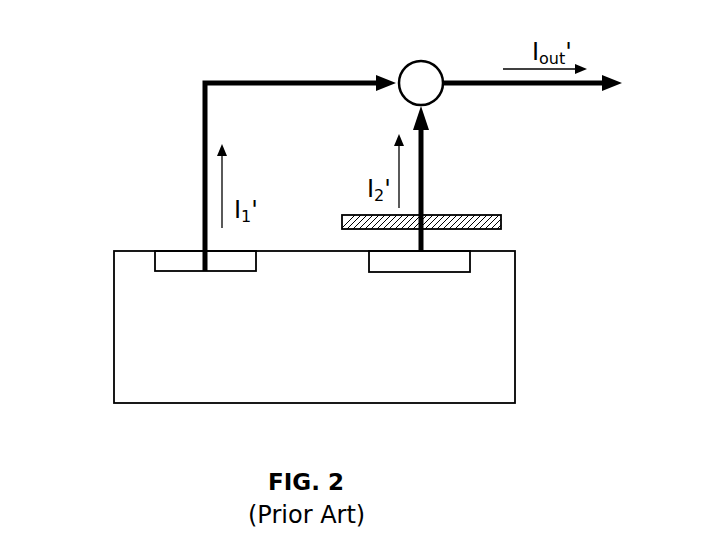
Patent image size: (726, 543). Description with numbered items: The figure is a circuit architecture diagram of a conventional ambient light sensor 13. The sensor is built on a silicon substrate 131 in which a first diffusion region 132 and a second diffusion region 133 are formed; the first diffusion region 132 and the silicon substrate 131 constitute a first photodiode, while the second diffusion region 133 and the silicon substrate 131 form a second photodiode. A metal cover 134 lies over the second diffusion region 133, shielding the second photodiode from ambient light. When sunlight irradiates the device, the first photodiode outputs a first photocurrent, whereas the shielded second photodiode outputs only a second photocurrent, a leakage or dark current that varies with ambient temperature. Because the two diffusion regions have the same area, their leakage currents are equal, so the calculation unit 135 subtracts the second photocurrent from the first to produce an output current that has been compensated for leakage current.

The ambient light sensor 13 is at (88, 88).
The silicon substrate 131 is at (130, 383).
The first diffusion region 132 is at (171, 257).
The second diffusion region 133 is at (462, 268).
The metal cover 134 is at (483, 215).
The calculation unit 135 is at (421, 61).